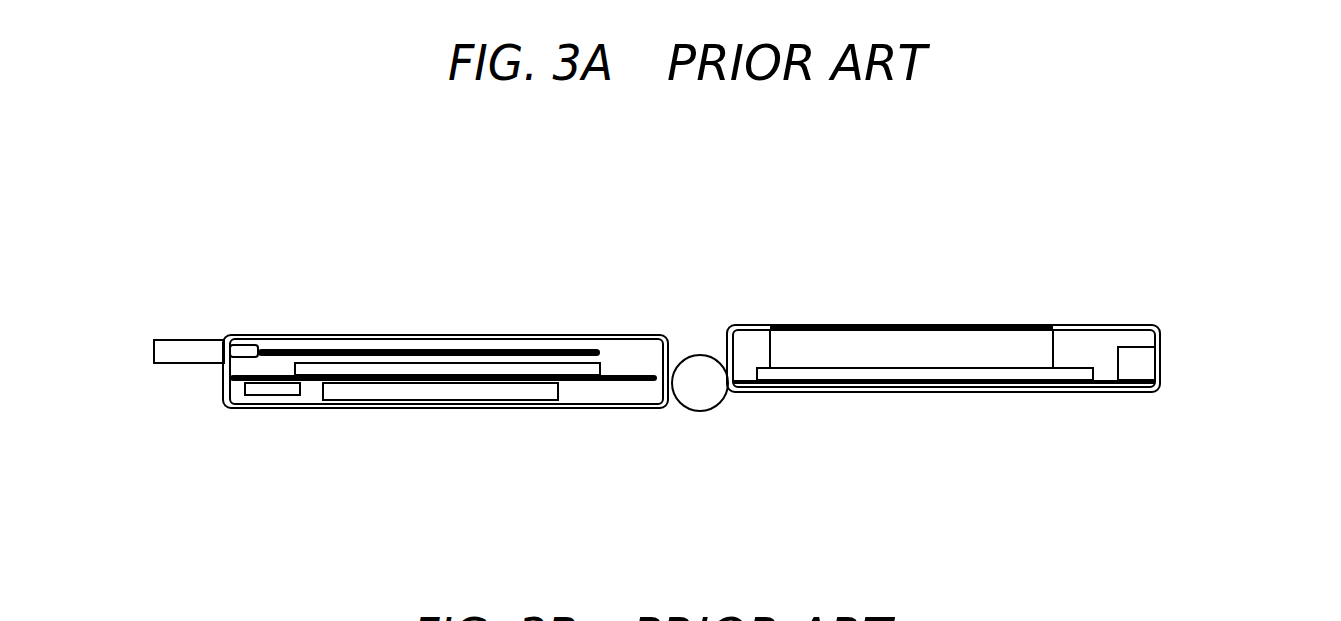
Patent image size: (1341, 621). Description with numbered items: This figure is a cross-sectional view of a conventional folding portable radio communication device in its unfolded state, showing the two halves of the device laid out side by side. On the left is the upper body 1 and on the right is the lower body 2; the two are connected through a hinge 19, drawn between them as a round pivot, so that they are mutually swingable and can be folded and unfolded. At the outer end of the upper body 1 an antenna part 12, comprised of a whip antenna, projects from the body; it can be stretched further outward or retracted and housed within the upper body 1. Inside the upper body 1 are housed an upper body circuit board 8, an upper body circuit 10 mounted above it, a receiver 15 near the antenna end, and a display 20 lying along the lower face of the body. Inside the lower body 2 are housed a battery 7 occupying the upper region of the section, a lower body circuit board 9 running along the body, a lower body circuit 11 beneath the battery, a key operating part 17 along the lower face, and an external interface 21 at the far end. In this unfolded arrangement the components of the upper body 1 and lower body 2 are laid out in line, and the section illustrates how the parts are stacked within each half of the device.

The upper body 1 is at (396, 292).
The lower body 2 is at (1030, 305).
The battery 7 is at (861, 326).
The upper body circuit board 8 is at (580, 385).
The lower body circuit board 9 is at (1017, 395).
The upper body circuit 10 is at (538, 363).
The lower body circuit 11 is at (780, 380).
The antenna part 12 is at (270, 333).
The receiver 15 is at (258, 397).
The key operating part 17 is at (895, 395).
The hinge 19 is at (690, 352).
The display 20 is at (362, 408).
The external interface 21 is at (1132, 360).